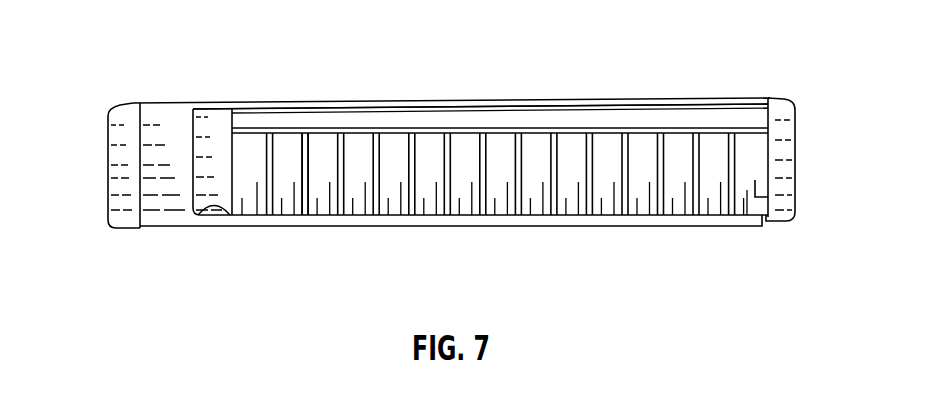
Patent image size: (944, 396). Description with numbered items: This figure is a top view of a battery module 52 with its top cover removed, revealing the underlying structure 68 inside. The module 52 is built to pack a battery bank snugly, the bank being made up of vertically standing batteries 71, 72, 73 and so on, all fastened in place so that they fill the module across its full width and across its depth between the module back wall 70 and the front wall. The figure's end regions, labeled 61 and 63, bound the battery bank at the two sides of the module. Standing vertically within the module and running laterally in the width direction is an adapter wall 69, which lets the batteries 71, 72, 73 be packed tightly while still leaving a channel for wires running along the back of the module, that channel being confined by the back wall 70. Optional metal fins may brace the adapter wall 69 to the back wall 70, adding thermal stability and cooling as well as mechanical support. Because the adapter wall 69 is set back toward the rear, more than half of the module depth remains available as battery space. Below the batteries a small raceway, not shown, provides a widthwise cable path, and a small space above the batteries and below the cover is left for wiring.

The battery module 52 is at (752, 249).
The right end cap 61 is at (788, 132).
The left end cap 63 is at (117, 133).
The underlying structure 68 is at (138, 178).
The adapter wall 69 is at (472, 122).
The back wall 70 is at (585, 102).
The vertically standing battery 71 is at (250, 203).
The vertically standing battery 72 is at (287, 210).
The vertically standing battery 73 is at (322, 210).